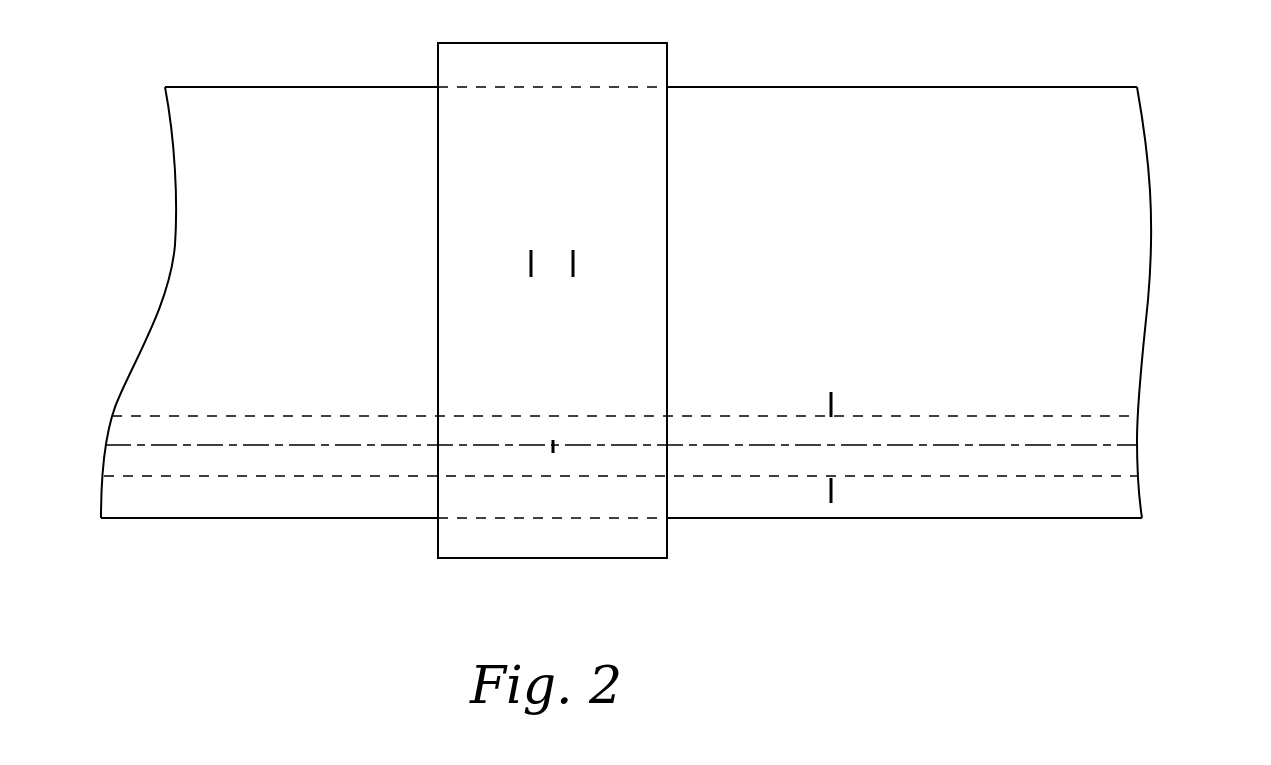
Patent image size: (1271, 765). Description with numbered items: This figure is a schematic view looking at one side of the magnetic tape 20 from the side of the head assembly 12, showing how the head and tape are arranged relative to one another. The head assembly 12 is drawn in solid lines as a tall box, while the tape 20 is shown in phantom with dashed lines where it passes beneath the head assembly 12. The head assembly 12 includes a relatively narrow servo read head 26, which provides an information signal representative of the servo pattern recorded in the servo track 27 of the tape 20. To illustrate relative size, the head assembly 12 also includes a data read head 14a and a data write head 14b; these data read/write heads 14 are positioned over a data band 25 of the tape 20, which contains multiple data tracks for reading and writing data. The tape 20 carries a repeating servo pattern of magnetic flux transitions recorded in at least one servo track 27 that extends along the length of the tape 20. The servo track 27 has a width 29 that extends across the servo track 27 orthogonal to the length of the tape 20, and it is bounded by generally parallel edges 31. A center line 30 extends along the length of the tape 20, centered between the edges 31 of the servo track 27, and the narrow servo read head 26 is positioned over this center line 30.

The head assembly 12 is at (437, 532).
The data read/write heads 14 is at (556, 202).
The data read head 14a is at (528, 265).
The data write head 14b is at (578, 266).
The magnetic tape 20 is at (897, 87).
The data band 25 is at (318, 212).
The servo read head 26 is at (548, 445).
The servo track 27 is at (1152, 470).
The width 29 is at (835, 405).
The center line 30 is at (1088, 445).
The edges 31 is at (951, 416).